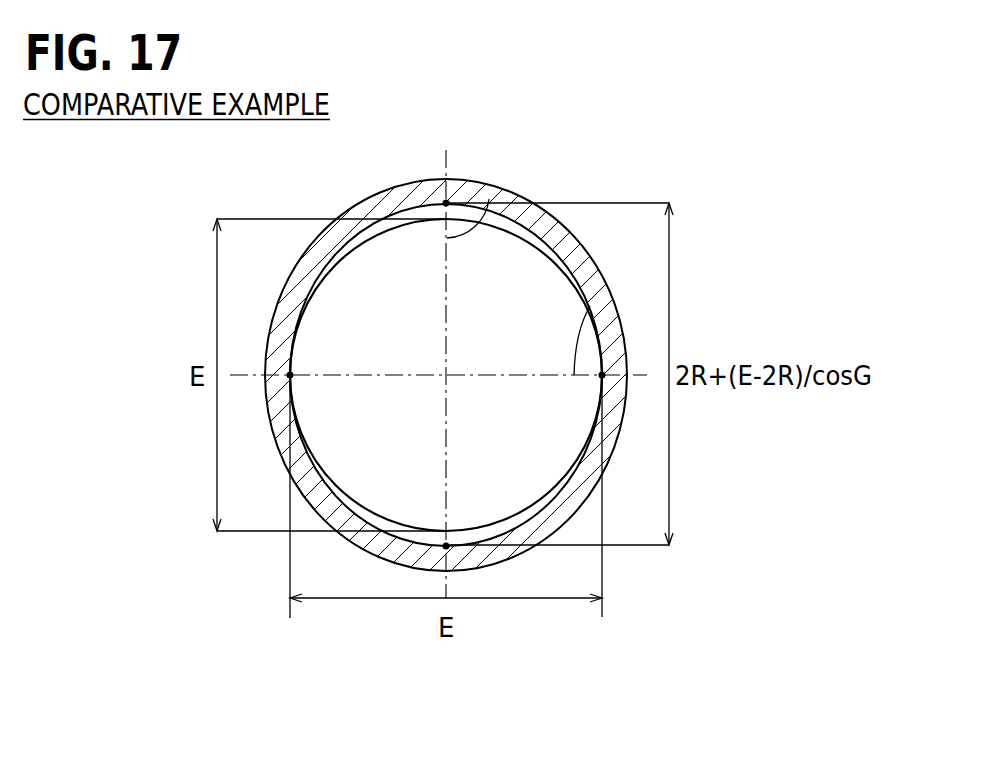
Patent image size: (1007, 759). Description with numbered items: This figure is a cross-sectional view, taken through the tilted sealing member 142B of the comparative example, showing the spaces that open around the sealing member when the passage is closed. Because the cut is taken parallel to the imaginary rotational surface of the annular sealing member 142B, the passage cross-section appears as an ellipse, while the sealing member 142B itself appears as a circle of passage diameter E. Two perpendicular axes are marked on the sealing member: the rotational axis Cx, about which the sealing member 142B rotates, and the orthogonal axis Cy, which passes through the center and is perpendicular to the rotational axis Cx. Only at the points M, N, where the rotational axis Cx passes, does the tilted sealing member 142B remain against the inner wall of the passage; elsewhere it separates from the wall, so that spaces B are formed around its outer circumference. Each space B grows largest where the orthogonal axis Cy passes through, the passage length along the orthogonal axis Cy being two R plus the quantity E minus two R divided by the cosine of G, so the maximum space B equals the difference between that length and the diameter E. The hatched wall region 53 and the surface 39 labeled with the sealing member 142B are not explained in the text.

The valve body wall around injection hole 53 is at (425, 195).
The sealing member 142B is at (512, 253).
The injection hole 39 is at (479, 330).
The space B is at (442, 213).
The point M is at (288, 374).
The point N is at (605, 372).
The rotational axis Cx is at (604, 275).
The orthogonal axis Cy is at (489, 198).